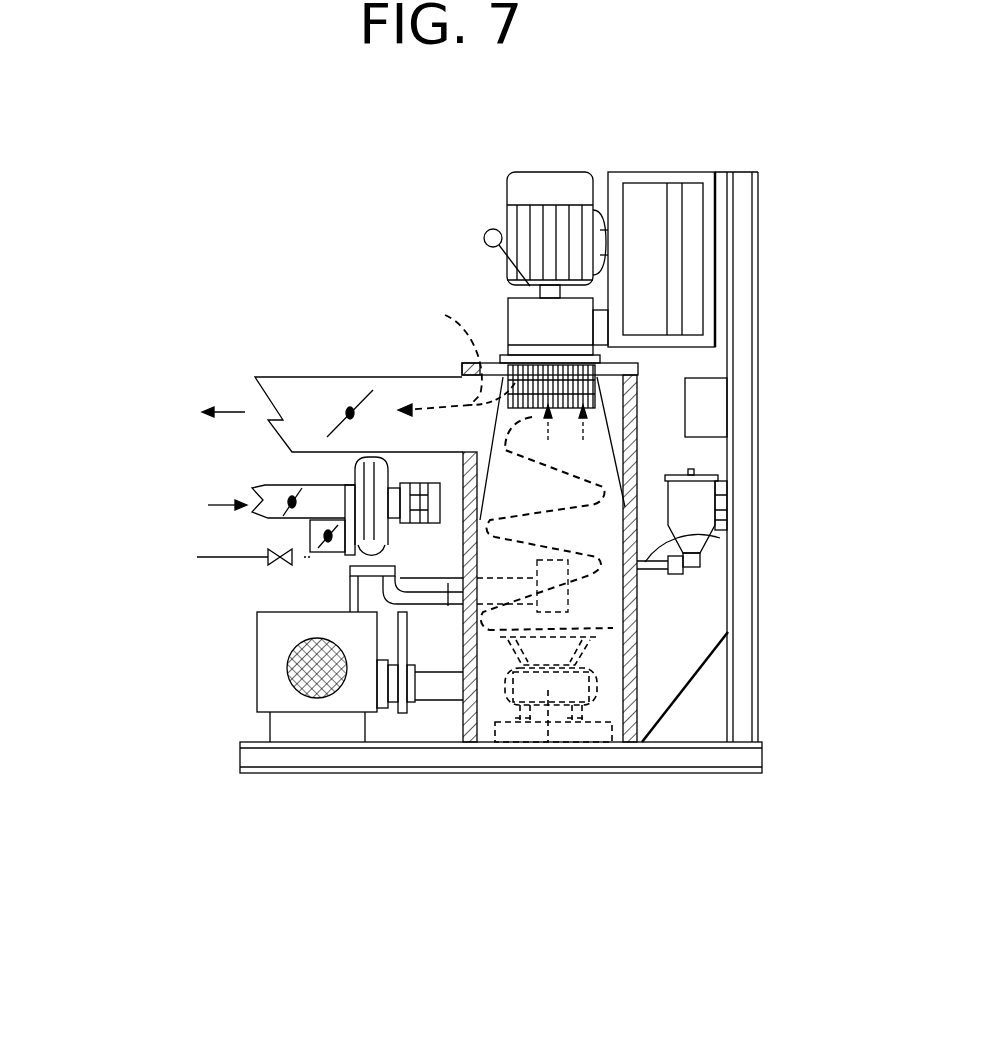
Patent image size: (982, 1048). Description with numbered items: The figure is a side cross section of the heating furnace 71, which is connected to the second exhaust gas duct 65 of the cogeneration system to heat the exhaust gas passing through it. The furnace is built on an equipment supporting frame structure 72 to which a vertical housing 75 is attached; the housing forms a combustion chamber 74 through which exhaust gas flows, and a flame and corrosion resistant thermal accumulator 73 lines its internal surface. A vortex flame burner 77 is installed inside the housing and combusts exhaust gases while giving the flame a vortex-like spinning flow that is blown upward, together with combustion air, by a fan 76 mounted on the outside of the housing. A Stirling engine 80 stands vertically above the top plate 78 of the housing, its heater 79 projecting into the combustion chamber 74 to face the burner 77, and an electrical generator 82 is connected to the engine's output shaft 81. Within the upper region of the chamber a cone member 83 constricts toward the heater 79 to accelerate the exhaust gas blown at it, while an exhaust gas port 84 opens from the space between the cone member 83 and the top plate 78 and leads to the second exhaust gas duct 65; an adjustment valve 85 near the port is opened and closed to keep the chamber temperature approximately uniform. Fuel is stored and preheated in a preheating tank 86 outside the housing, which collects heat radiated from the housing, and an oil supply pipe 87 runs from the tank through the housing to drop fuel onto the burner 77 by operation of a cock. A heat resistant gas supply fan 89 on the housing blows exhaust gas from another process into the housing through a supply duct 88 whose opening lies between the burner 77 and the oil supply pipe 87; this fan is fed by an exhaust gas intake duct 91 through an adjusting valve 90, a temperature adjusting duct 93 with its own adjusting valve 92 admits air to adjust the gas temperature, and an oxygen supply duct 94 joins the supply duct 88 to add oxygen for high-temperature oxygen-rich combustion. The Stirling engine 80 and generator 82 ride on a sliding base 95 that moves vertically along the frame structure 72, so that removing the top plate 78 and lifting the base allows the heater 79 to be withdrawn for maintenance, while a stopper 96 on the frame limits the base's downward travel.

The second exhaust gas duct 65 is at (262, 378).
The heating furnace 71 is at (265, 812).
The equipment supporting frame structure 72 is at (740, 483).
The thermal accumulator 73 is at (452, 742).
The combustion chamber 74 is at (597, 608).
The vertical housing 75 is at (652, 682).
The fan 76 is at (272, 690).
The vortex flame burner 77 is at (548, 742).
The top plate 78 is at (598, 372).
The heater 79 is at (456, 354).
The Stirling engine 80 is at (515, 312).
The output shaft 81 is at (488, 232).
The electrical generator 82 is at (552, 172).
The cone member 83 is at (640, 452).
The exhaust gas port 84 is at (455, 377).
The adjustment valve 85 is at (330, 378).
The preheating tank 86 is at (700, 546).
The oil supply pipe 87 is at (718, 527).
The supply duct 88 is at (350, 590).
The heat resistant gas supply fan 89 is at (355, 470).
The adjusting valve 90 is at (283, 505).
The exhaust gas intake duct 91 is at (250, 482).
The adjusting valve 92 is at (330, 560).
The temperature adjusting duct 93 is at (318, 530).
The oxygen supply duct 94 is at (197, 558).
The sliding base 95 is at (658, 172).
The stopper 96 is at (710, 398).